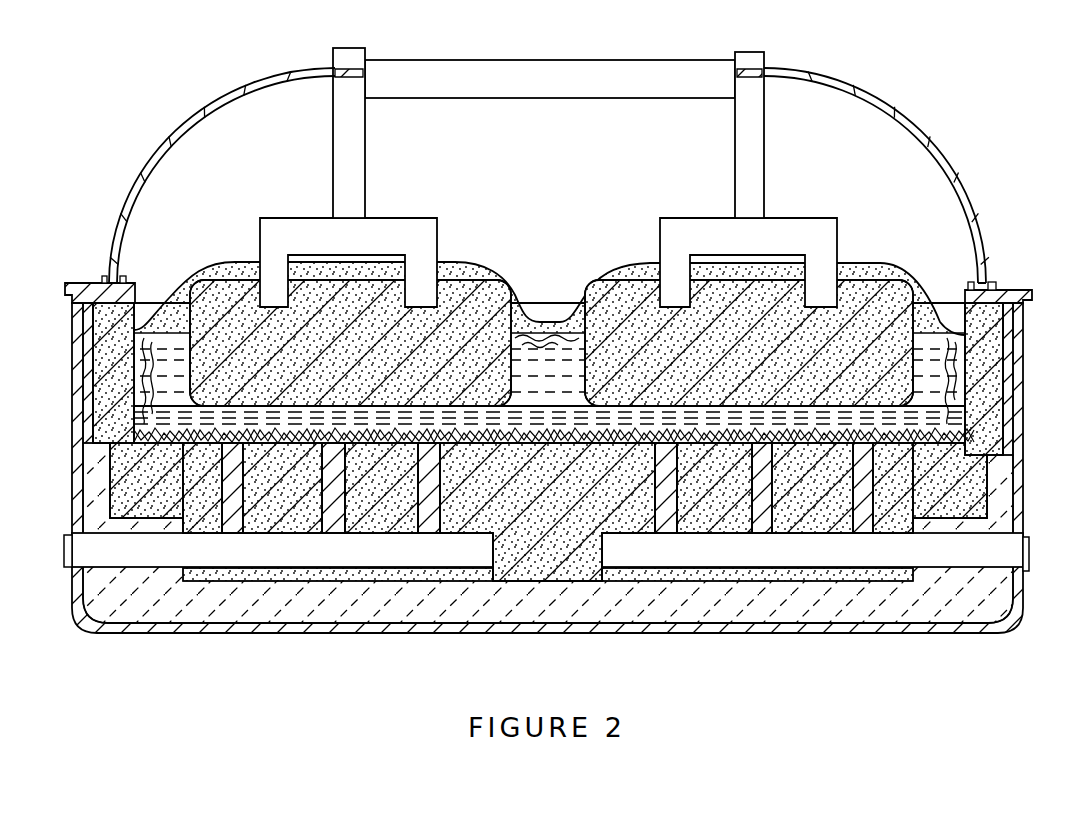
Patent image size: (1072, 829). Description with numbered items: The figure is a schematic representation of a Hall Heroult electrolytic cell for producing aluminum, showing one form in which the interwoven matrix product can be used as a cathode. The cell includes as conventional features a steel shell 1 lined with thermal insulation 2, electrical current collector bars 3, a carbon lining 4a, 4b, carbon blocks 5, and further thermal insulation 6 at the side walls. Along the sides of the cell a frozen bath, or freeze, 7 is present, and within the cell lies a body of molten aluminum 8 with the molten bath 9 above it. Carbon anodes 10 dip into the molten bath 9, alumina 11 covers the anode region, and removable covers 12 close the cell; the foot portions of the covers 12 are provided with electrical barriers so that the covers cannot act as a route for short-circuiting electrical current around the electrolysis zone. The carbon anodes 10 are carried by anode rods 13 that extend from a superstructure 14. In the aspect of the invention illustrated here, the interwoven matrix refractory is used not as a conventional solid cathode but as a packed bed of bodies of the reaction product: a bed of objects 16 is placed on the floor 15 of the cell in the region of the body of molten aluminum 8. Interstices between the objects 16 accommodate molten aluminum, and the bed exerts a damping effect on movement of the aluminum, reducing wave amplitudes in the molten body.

The steel shell 1 is at (1022, 587).
The thermal insulation 2 is at (92, 470).
The electrical current collector bars 3 is at (64, 540).
The carbon lining 4a is at (568, 501).
The carbon lining 4b is at (978, 490).
The carbon blocks 5 is at (997, 386).
The thermal insulation 6 is at (90, 328).
The frozen bath 7 is at (932, 340).
The molten aluminum 8 is at (704, 418).
The molten bath 9 is at (535, 357).
The carbon anodes 10 is at (466, 366).
The alumina 11 is at (860, 273).
The removable covers 12 is at (946, 166).
The anode rods 13 is at (763, 52).
The superstructure 14 is at (600, 60).
The floor 15 is at (513, 443).
The bed of objects 16 is at (318, 443).